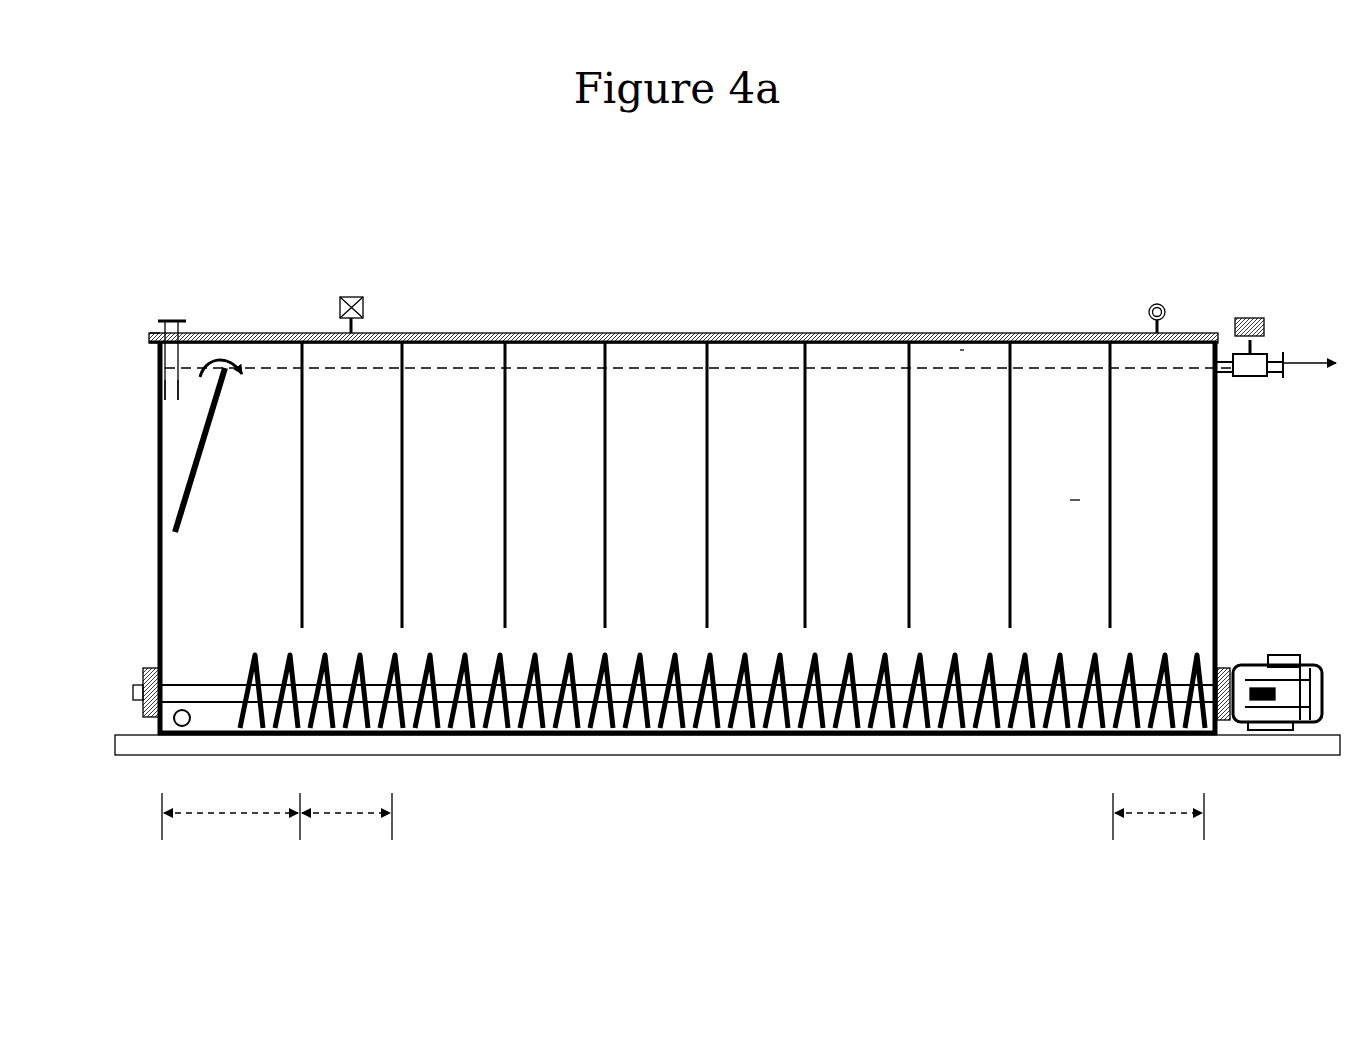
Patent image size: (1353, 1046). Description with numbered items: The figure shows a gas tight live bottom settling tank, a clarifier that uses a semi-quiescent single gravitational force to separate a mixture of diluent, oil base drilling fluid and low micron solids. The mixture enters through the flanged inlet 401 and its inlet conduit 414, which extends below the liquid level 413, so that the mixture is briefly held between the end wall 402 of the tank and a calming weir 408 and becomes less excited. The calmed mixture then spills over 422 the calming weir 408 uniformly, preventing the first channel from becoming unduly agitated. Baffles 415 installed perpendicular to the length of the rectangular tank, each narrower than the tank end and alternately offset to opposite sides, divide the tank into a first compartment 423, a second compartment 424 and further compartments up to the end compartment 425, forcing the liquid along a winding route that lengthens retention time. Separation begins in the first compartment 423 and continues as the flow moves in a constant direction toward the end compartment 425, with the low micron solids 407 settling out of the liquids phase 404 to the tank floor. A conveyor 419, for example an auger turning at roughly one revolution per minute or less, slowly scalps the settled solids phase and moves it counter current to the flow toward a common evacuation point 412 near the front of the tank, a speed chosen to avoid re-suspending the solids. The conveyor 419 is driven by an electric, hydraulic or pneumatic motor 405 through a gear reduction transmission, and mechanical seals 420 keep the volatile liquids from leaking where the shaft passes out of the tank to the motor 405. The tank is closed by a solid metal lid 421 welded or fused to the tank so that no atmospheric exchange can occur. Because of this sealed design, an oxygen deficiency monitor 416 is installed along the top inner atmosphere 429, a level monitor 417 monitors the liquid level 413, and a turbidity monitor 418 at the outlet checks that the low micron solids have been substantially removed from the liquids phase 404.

The inlet 401 is at (172, 312).
The end wall 402 is at (158, 447).
The liquids phase 404 is at (1075, 505).
The motor 405 is at (1283, 660).
The low micron solids 407 is at (755, 505).
The calming weir 408 is at (185, 493).
The common evacuation point 412 is at (172, 718).
The liquid level 413 is at (272, 365).
The inlet conduit 414 is at (172, 356).
The baffle 415 is at (405, 347).
The oxygen deficiency monitor 416 is at (1157, 302).
The level monitor 417 is at (351, 295).
The turbidity monitor 418 is at (1250, 316).
The conveyor 419 is at (855, 695).
The mechanical seal 420 is at (145, 668).
The solid metal lid 421 is at (452, 333).
The spill over 422 is at (228, 360).
The first compartment 423 is at (231, 826).
The second compartment 424 is at (347, 826).
The end compartment 425 is at (1158, 826).
The top inner atmosphere 429 is at (962, 352).